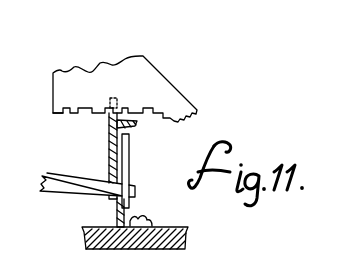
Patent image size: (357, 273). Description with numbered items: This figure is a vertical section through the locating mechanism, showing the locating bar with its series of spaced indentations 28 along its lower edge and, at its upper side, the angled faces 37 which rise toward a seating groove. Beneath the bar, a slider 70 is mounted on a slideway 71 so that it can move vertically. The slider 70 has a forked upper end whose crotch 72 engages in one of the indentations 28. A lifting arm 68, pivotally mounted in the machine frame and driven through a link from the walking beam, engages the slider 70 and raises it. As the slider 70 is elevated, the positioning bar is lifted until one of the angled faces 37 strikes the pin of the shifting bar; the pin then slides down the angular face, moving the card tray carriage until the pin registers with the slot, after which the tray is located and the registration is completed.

The angled faces 37 is at (161, 76).
The crotch 72 is at (108, 106).
The spaced indentations 28 is at (60, 114).
The slider 70 is at (108, 157).
The slideway 71 is at (130, 135).
The lifting arm 68 is at (71, 191).